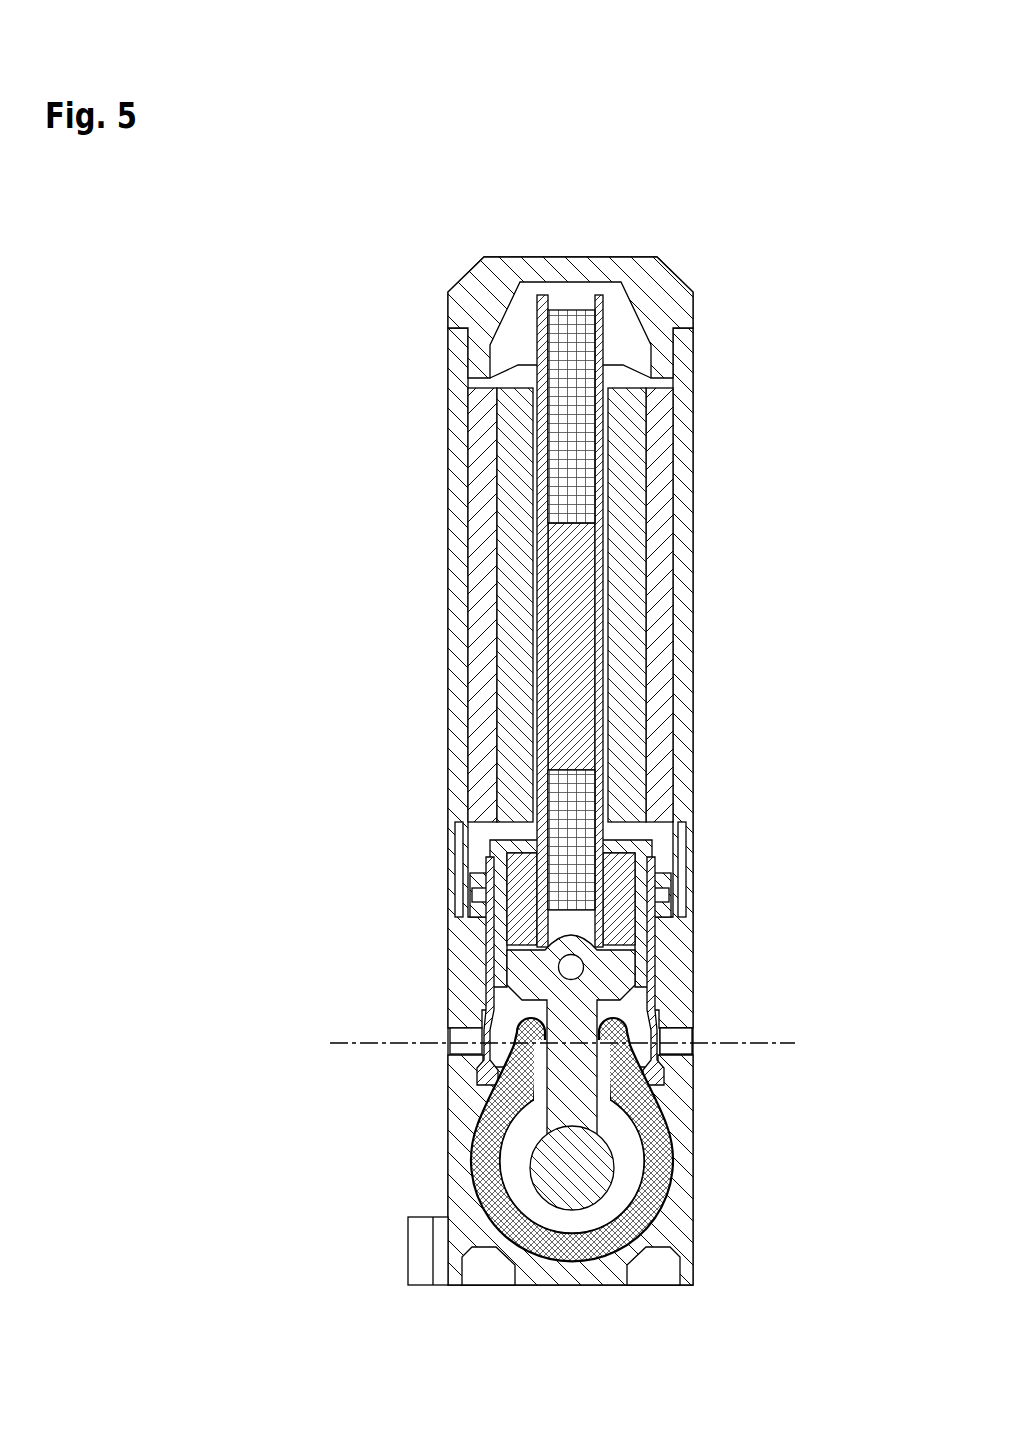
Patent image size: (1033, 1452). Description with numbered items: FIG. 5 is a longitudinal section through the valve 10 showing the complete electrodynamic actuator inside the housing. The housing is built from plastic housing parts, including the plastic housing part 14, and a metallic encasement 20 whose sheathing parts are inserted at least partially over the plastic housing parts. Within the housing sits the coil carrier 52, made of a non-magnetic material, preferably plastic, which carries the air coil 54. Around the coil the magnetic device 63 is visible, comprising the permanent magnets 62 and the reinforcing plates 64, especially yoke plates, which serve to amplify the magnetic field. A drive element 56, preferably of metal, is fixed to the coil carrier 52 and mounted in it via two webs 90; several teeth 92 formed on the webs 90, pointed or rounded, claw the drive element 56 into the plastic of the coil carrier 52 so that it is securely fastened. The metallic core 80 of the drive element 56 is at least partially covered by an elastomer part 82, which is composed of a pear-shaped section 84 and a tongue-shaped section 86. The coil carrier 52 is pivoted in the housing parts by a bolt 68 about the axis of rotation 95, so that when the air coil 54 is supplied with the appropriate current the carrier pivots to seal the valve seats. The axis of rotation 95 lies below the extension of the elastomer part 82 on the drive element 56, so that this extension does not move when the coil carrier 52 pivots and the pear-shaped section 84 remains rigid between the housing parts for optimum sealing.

The valve 10 is at (783, 187).
The plastic housing part 14 is at (465, 1103).
The metallic encasement 20 is at (461, 444).
The coil carrier 52 is at (562, 655).
The air coil 54 is at (567, 809).
The drive element 56 is at (600, 983).
The permanent magnets 62 is at (513, 506).
The magnetic device 63 is at (448, 343).
The reinforcing plates 64 is at (486, 569).
The bolt 68 is at (457, 1018).
The metallic core 80 is at (572, 1147).
The elastomer part 82 is at (650, 1140).
The pear-shaped section 84 is at (486, 1178).
The tongue-shaped section 86 is at (558, 1202).
The webs 90 is at (657, 875).
The teeth 92 is at (627, 898).
The axis of rotation 95 is at (720, 1033).